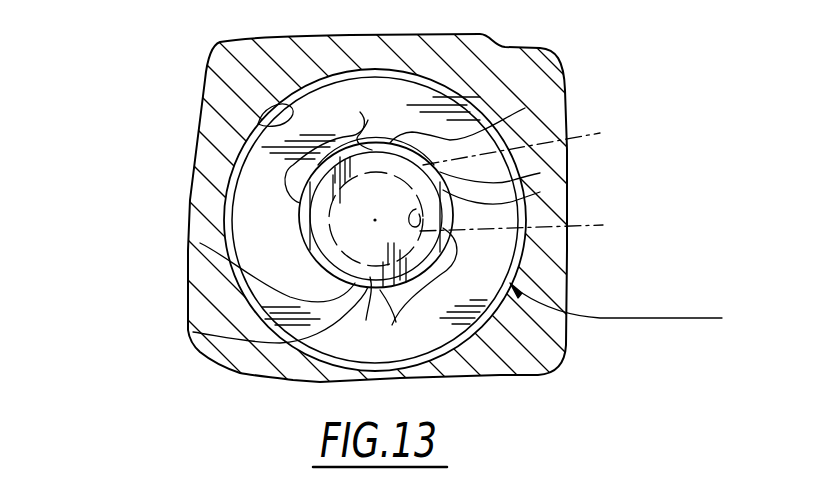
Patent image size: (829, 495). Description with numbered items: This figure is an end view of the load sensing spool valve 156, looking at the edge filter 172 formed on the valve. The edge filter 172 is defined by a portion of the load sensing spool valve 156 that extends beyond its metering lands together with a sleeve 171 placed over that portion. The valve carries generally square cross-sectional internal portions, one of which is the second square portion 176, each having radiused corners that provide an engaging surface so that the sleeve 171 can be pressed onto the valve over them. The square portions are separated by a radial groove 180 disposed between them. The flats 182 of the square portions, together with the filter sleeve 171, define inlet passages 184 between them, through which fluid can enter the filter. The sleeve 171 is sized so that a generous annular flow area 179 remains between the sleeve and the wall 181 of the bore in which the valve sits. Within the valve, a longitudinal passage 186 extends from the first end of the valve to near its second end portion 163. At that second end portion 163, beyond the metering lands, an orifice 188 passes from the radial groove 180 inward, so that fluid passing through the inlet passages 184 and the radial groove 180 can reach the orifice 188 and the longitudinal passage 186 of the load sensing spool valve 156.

The load sensing spool valve 156 is at (522, 332).
The second end portion 163 is at (453, 203).
The sleeve 171 is at (490, 243).
The edge filter 172 is at (527, 288).
The second generally square cross-sectional internal portion 176 is at (193, 332).
The annular flow area 179 is at (639, 307).
The radial groove 180 is at (534, 164).
The wall 181 is at (258, 119).
The flats 182 is at (483, 130).
The inlet passages 184 is at (378, 222).
The longitudinal passage 186 is at (479, 216).
The orifice 188 is at (323, 228).